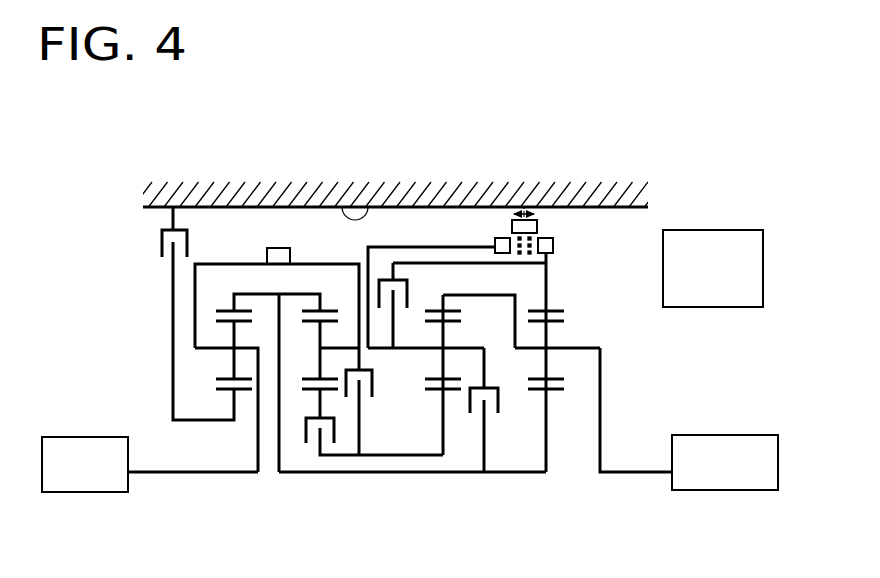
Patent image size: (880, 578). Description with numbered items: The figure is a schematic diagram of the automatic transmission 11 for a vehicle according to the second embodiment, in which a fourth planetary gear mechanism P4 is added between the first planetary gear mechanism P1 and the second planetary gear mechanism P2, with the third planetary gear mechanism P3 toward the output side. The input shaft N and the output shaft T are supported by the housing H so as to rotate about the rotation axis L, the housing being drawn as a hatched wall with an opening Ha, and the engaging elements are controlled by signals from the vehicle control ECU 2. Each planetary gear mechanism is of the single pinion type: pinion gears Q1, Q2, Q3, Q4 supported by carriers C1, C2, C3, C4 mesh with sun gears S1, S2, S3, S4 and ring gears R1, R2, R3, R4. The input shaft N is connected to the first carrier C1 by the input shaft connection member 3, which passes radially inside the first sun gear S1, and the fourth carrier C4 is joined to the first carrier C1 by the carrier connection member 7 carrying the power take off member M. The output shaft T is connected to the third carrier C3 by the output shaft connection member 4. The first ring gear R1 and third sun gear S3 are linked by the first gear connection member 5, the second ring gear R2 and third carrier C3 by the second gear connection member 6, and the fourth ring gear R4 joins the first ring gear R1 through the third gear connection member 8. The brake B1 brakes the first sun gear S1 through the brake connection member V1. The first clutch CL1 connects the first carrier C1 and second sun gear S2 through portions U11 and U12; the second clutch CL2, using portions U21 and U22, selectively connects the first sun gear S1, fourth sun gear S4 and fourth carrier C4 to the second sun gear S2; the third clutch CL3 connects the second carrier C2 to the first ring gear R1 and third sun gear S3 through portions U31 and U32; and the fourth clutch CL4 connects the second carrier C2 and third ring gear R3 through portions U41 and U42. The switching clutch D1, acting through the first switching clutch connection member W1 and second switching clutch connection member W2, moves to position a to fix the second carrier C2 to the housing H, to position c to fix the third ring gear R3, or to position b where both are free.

The vehicle control ECU 2 is at (698, 229).
The input shaft connection member 3 is at (203, 475).
The output shaft connection member 4 is at (631, 474).
The first gear connection member 5 is at (425, 474).
The second gear connection member 6 is at (468, 295).
The carrier connection member 7 is at (312, 262).
The third gear connection member 8 is at (258, 296).
The automatic transmission 11 is at (583, 167).
The housing H is at (310, 192).
The case opening Ha is at (370, 206).
The power take off member M is at (272, 247).
The input shaft N is at (85, 493).
The output shaft T is at (720, 491).
The rotation axis L is at (271, 475).
The brake B1 is at (157, 259).
The brake connection member V1 is at (173, 350).
The first planetary gear mechanism P1 is at (229, 408).
The second planetary gear mechanism P2 is at (450, 406).
The third planetary gear mechanism P3 is at (552, 395).
The fourth planetary gear mechanism P4 is at (321, 407).
The first ring gear R1 is at (229, 309).
The second ring gear R2 is at (433, 309).
The third ring gear R3 is at (562, 309).
The fourth ring gear R4 is at (322, 309).
The first sun gear S1 is at (232, 400).
The second sun gear S2 is at (441, 393).
The third sun gear S3 is at (543, 397).
The fourth sun gear S4 is at (318, 406).
The first carrier C1 is at (240, 347).
The second carrier C2 is at (459, 347).
The third carrier C3 is at (557, 347).
The fourth carrier C4 is at (329, 337).
The first pinion gear Q1 is at (232, 363).
The second pinion gear Q2 is at (445, 364).
The third pinion gear Q3 is at (548, 365).
The fourth pinion gear Q4 is at (319, 361).
The first clutch CL1 is at (398, 383).
The second clutch CL2 is at (304, 451).
The third clutch CL3 is at (496, 424).
The fourth clutch CL4 is at (378, 276).
The first portion of first-clutch connection member U11 is at (361, 362).
The second portion of first-clutch connection member U12 is at (361, 444).
The first portion of second-clutch connection member U21 is at (324, 407).
The second portion of second-clutch connection member U22 is at (350, 457).
The first portion of third-clutch connection member U31 is at (487, 368).
The second portion of third-clutch connection member U32 is at (478, 454).
The first portion of fourth-clutch connection member U41 is at (441, 241).
The second portion of fourth-clutch connection member U42 is at (394, 340).
The first switching clutch connection member W1 is at (487, 240).
The second switching clutch connection member W2 is at (553, 261).
The switching clutch D1 is at (569, 240).
The position a is at (505, 238).
The position b is at (522, 220).
The position c is at (547, 238).